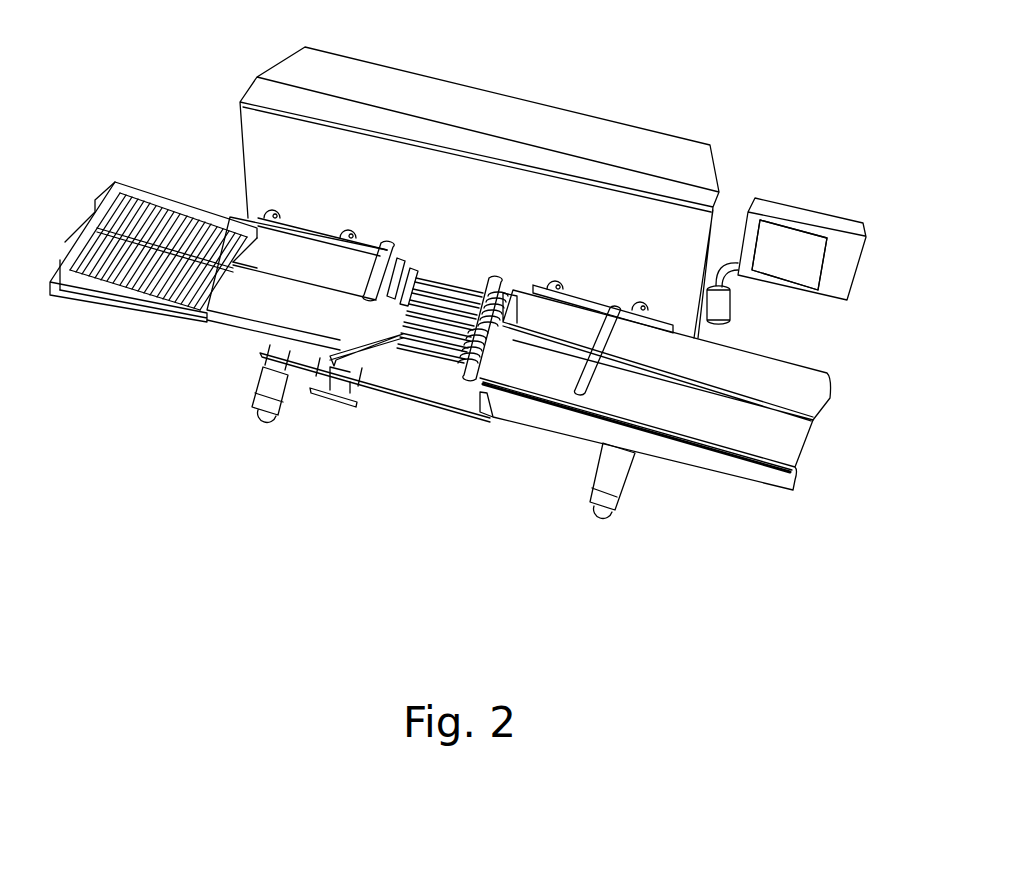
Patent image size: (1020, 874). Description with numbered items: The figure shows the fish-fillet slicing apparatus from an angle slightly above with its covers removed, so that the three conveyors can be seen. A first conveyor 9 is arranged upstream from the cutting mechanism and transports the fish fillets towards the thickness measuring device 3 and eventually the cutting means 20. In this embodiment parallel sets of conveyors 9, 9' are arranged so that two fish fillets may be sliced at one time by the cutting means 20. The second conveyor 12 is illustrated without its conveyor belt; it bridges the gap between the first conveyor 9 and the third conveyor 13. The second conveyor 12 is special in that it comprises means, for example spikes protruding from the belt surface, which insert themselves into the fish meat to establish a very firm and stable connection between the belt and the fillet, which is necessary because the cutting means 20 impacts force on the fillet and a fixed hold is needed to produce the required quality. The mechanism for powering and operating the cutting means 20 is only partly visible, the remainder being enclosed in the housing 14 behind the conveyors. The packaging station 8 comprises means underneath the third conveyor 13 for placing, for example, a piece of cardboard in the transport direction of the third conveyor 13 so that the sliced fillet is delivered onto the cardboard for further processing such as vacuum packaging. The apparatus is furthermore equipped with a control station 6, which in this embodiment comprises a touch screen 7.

The housing 14 is at (486, 88).
The touch screen 7 is at (800, 203).
The control station 6 is at (857, 213).
The packaging station 8 is at (97, 292).
The third conveyor 13 is at (253, 302).
The cutting means 20 is at (333, 408).
The second conveyor 12 is at (436, 408).
The thickness measuring device 3 is at (587, 395).
The first conveyor (parallel set) 9' is at (696, 366).
The first conveyor 9 is at (673, 436).